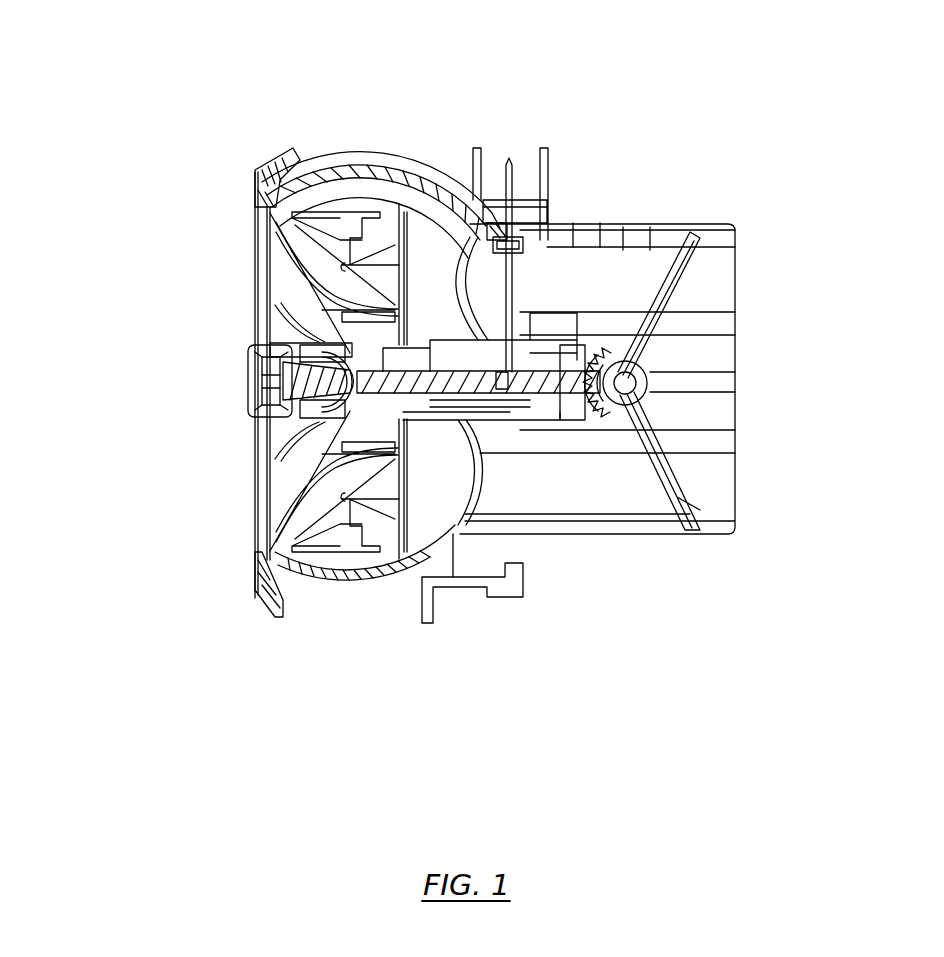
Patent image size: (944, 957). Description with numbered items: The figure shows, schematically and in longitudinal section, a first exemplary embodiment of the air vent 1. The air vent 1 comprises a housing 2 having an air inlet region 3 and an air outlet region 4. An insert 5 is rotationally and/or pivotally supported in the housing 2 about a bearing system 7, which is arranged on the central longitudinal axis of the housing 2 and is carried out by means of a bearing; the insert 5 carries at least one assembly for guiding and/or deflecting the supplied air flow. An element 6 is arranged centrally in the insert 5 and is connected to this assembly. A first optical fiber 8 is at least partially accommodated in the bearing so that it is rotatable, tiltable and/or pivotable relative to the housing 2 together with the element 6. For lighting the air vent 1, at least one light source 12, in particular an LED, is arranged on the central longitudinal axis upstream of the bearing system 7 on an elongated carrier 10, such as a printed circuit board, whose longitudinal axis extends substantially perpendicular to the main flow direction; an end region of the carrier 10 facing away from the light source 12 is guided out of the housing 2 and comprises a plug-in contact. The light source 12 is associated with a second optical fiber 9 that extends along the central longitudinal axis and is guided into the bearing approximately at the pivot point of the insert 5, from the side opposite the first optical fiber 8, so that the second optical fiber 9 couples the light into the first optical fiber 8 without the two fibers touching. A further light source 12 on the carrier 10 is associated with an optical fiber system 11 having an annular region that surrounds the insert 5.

The air vent 1 is at (391, 58).
The housing 2 is at (357, 157).
The air inlet region 3 is at (745, 317).
The air outlet region 4 is at (228, 283).
The insert 5 is at (247, 377).
The element 6 is at (350, 352).
The bearing system 7 is at (352, 356).
The first optical fiber 8 is at (328, 385).
The second optical fiber 9 is at (443, 380).
The carrier 10 is at (510, 283).
The optical fiber system 11 is at (318, 186).
The light source 12 is at (503, 222).